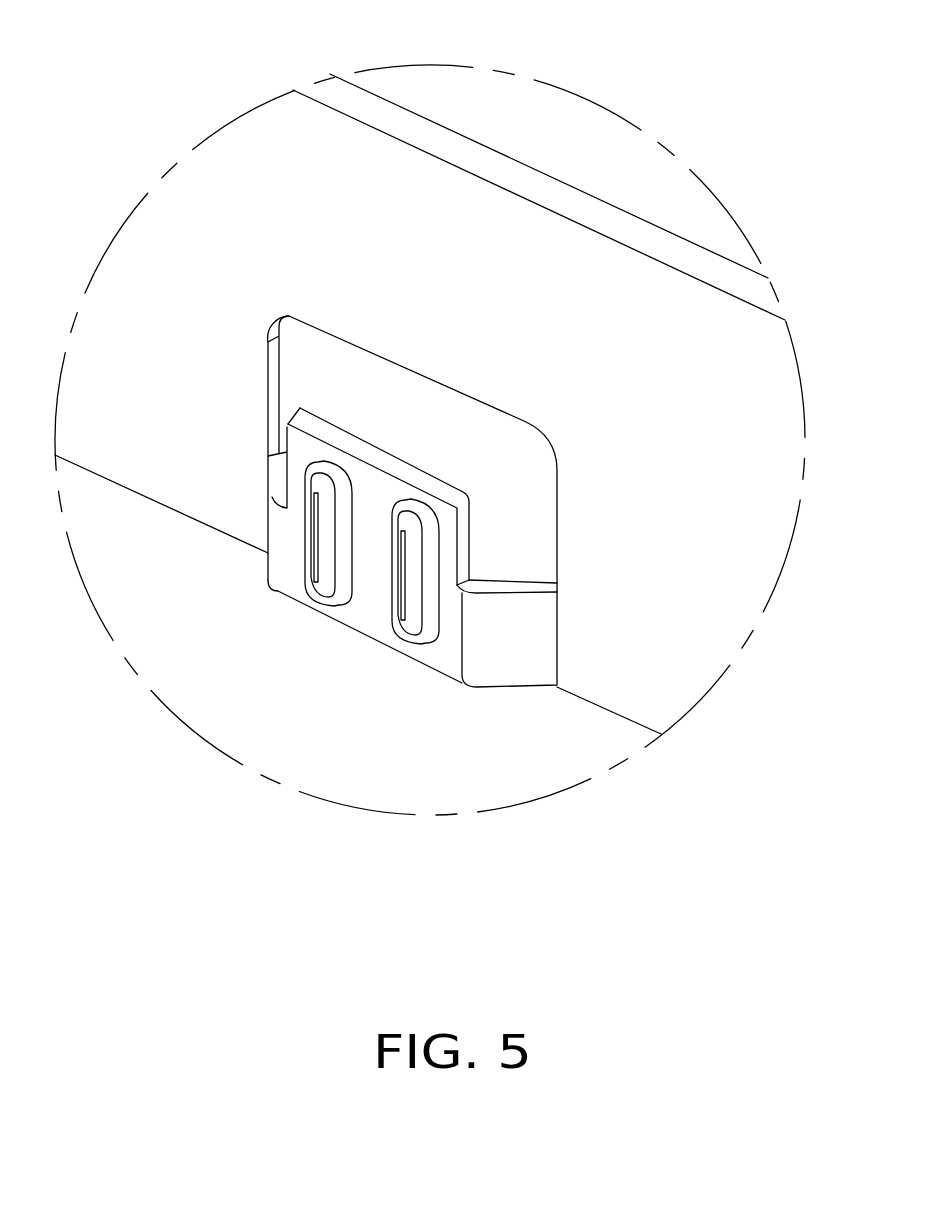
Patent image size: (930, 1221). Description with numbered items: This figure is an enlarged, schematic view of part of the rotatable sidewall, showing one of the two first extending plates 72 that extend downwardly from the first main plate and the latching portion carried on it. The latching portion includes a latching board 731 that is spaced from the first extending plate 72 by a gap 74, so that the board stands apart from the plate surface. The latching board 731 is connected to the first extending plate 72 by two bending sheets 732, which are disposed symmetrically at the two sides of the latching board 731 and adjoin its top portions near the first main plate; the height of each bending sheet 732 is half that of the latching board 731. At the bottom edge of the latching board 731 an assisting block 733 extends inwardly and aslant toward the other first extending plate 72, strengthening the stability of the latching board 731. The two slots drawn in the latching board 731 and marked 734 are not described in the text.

The first extending plate 72 is at (273, 167).
The latching board 731 is at (358, 640).
The bending sheet 732 is at (520, 638).
The assisting block 733 is at (343, 432).
The slot 734 is at (325, 580).
The gap 74 is at (526, 538).